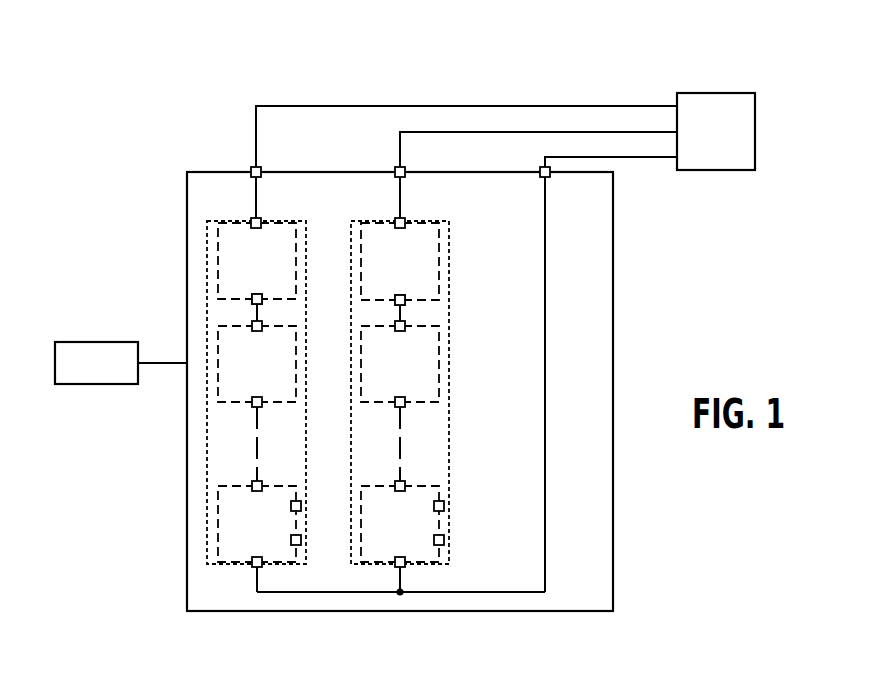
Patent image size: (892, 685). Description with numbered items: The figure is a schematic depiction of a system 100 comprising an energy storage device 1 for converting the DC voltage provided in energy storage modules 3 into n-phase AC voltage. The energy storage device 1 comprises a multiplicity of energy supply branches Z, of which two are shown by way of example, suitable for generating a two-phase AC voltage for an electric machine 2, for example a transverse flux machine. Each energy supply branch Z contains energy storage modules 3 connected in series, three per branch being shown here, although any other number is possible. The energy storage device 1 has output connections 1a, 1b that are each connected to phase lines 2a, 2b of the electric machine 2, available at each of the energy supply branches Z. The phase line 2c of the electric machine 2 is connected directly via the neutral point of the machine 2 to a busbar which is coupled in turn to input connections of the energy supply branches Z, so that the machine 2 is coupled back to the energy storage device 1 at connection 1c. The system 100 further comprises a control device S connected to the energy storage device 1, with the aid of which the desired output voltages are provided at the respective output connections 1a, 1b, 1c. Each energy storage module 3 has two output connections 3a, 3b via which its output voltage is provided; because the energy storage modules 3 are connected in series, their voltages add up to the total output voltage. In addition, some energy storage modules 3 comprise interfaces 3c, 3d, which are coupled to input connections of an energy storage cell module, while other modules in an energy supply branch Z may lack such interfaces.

The system 100 is at (204, 103).
The energy storage device 1 is at (186, 212).
The output connection 1a is at (251, 170).
The output connection 1b is at (395, 170).
The output connection 1c is at (540, 170).
The electric machine 2 is at (714, 92).
The phase line 2a is at (327, 105).
The phase line 2b is at (460, 131).
The phase line 2c is at (595, 156).
The energy storage module 3 is at (297, 262).
The output connection 3a is at (395, 223).
The output connection 3b is at (395, 307).
The interface 3c is at (301, 506).
The interface 3d is at (301, 541).
The control device S is at (96, 341).
The energy supply branch Z is at (206, 437).